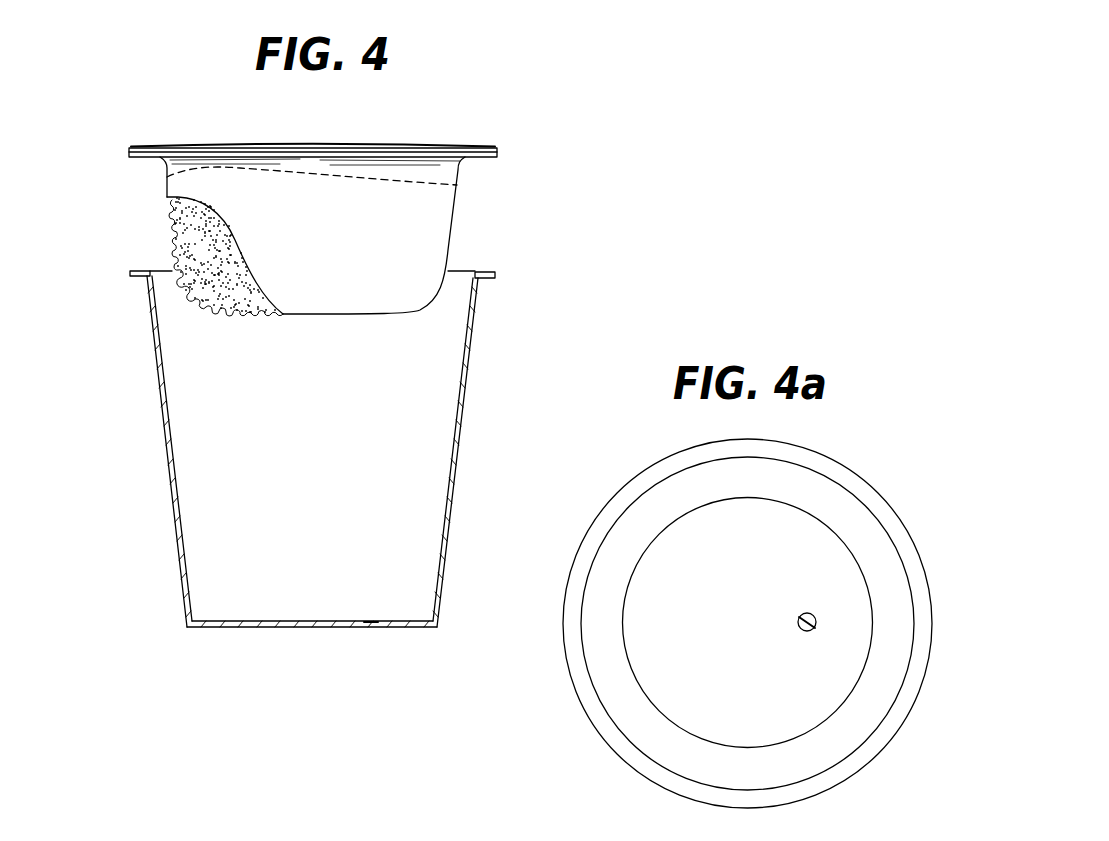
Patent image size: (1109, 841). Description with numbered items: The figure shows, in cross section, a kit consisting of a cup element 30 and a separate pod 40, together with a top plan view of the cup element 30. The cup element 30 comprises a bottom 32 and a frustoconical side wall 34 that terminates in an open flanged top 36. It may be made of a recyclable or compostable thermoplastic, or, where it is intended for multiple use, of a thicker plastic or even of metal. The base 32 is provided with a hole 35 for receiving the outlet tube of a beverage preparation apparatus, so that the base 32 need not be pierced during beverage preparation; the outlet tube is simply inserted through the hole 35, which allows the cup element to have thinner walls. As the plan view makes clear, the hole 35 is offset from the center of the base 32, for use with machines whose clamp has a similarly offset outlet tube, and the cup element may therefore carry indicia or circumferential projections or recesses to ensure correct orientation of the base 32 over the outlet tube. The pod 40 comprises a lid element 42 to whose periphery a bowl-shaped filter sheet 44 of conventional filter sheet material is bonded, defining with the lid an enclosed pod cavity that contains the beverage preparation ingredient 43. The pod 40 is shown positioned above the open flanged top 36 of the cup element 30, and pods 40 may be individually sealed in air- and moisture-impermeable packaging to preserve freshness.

In FIG. 4, the cup element 30 is at (329, 490).
In FIG. 4, the bottom 32 is at (220, 629).
In FIG. 4a, the bottom 32 is at (771, 582).
In FIG. 4, the frustoconical side wall 34 is at (163, 463).
In FIG. 4, the hole 35 is at (370, 629).
In FIG. 4a, the hole 35 is at (798, 615).
In FIG. 4, the open flanged top 36 is at (136, 278).
In FIG. 4a, the open flanged top 36 is at (600, 716).
In FIG. 4, the pod 40 is at (325, 172).
In FIG. 4, the lid element 42 is at (152, 146).
In FIG. 4, the beverage preparation ingredient 43 is at (196, 240).
In FIG. 4, the bowl-shaped filter sheet 44 is at (453, 222).